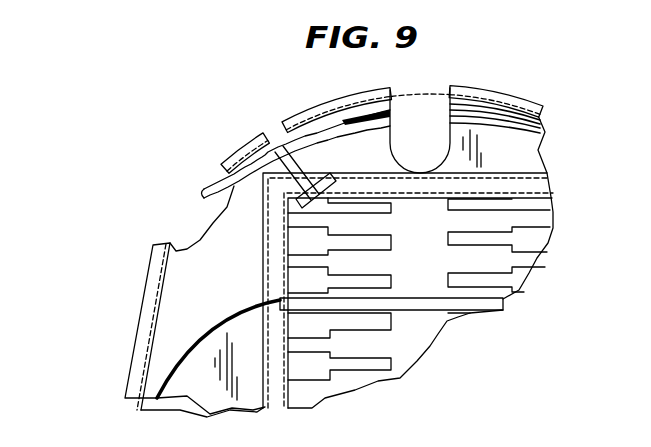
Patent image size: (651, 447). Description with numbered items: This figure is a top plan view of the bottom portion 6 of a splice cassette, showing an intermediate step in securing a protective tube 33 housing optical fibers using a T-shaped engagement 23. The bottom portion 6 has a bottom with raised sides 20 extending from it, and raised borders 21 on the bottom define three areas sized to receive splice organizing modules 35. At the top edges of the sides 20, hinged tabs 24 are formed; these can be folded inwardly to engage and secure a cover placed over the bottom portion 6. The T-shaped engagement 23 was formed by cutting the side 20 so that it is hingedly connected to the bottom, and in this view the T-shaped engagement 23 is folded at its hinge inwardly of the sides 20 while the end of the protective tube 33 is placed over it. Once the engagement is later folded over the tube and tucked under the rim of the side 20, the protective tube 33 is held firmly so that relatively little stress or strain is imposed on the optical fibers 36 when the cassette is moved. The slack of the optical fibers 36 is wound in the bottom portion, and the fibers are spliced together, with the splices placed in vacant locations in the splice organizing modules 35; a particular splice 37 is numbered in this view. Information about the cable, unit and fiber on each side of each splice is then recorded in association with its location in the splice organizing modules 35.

The bottom portion 6 is at (109, 126).
The raised sides 20 is at (130, 300).
The raised borders 21 is at (270, 292).
The T-shaped engagement 23 is at (303, 166).
The hinged tabs 24 is at (418, 104).
The protective tube 33 is at (206, 186).
The splice organizing modules 35 is at (430, 313).
The optical fibers 36 is at (518, 143).
The splice 37 is at (470, 313).